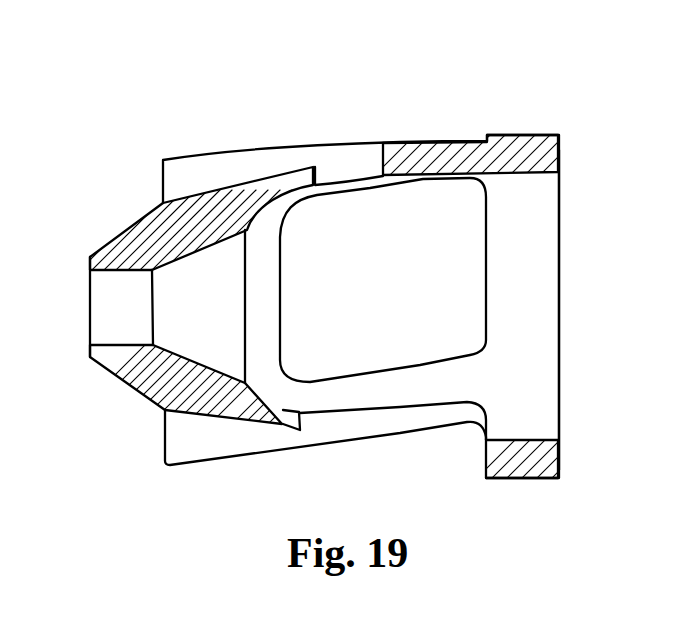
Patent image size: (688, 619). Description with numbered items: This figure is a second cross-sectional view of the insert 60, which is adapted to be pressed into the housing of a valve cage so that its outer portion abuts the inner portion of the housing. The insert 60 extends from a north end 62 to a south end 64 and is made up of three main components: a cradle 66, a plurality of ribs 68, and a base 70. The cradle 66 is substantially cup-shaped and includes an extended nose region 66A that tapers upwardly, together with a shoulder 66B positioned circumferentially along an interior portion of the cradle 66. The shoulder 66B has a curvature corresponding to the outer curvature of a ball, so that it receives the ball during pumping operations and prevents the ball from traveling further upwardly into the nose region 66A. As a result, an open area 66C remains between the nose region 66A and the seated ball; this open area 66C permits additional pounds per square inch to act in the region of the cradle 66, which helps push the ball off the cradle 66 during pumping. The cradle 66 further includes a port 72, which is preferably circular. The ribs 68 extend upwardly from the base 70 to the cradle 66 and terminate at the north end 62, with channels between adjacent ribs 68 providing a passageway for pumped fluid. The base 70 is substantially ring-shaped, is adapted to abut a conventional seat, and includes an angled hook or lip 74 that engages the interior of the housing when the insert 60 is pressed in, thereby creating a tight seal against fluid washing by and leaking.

The insert 60 is at (373, 64).
The north end 62 is at (89, 350).
The south end 64 is at (559, 375).
The cradle 66 is at (152, 228).
The nose region 66A is at (113, 367).
The shoulder 66B is at (294, 423).
The open area 66C is at (213, 305).
The ribs 68 is at (402, 375).
The base 70 is at (546, 203).
The port 72 is at (101, 292).
The lip 74 is at (488, 143).